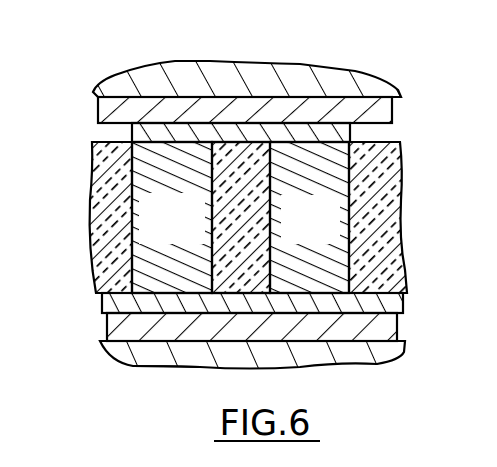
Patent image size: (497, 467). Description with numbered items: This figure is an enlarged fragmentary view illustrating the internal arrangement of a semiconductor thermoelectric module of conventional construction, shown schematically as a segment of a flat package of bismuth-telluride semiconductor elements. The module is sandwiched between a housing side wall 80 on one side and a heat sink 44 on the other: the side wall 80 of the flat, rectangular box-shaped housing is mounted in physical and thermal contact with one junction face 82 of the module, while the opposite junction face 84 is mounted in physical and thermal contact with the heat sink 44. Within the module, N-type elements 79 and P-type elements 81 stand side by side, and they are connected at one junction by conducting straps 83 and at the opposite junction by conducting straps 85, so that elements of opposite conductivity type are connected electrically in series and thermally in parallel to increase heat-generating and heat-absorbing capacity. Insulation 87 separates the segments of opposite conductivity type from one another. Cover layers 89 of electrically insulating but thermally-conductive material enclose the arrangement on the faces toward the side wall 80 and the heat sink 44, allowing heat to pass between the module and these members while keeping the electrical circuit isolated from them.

The heat sink 44 is at (322, 67).
The cover layers 89 is at (98, 99).
The conducting straps 83 is at (132, 127).
The junction faces 84 is at (235, 98).
The P-type elements 81 is at (345, 184).
The N-type elements 79 is at (135, 258).
The conducting straps 85 is at (106, 300).
The side wall 80 is at (130, 364).
The junction face 82 is at (163, 368).
The insulation 87 is at (260, 287).